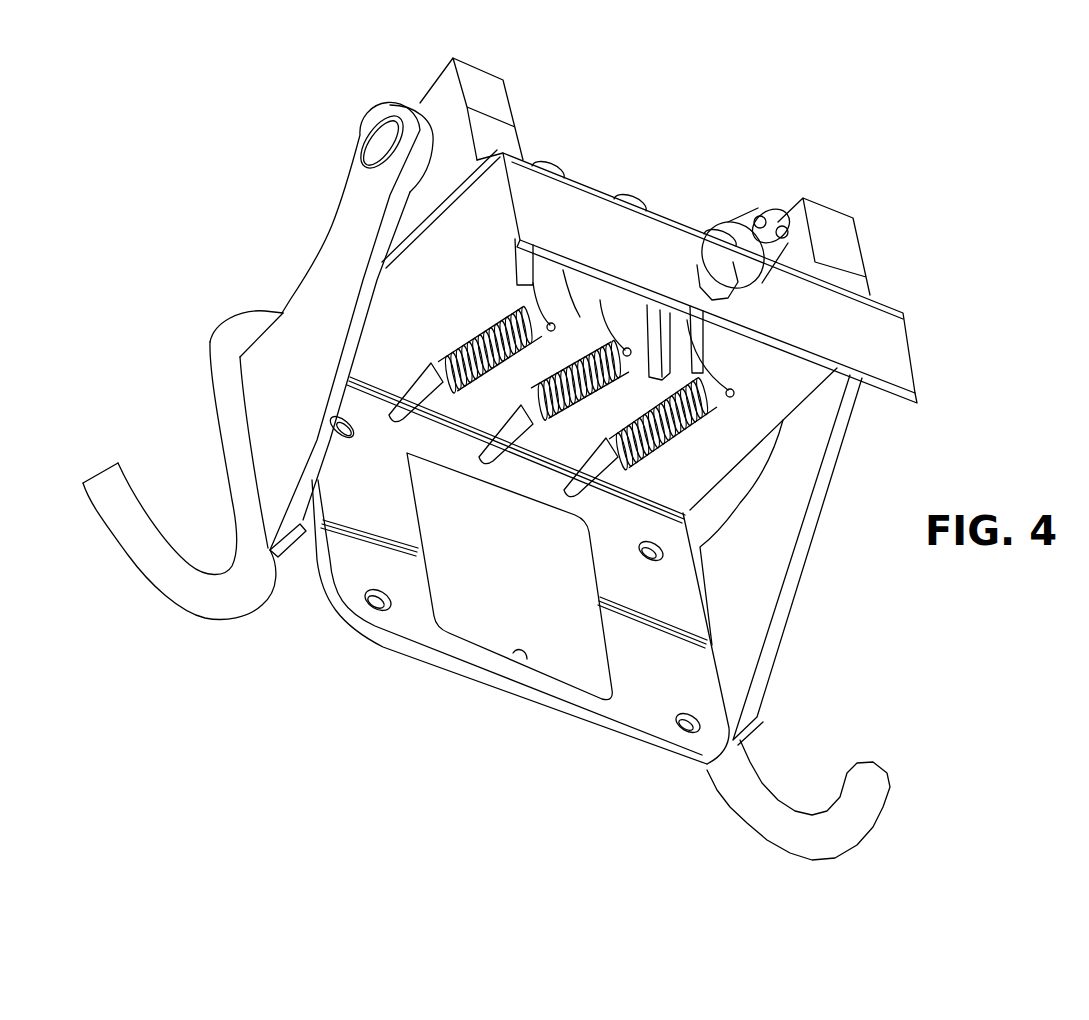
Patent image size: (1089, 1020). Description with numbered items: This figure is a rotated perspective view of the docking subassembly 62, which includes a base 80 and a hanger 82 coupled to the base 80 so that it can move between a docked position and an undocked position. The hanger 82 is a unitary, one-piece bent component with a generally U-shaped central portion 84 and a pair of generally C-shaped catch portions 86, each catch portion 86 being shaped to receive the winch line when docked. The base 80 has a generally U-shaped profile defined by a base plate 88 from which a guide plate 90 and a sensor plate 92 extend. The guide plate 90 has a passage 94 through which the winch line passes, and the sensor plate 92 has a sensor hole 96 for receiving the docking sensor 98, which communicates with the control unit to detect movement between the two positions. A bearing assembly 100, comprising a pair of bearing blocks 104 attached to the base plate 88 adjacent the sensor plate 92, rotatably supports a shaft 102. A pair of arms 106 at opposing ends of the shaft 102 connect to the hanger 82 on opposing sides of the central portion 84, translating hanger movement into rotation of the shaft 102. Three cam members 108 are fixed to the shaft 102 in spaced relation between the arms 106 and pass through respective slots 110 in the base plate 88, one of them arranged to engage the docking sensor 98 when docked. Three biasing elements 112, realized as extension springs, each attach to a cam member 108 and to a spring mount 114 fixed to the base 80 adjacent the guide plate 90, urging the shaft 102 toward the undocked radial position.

The docking subassembly 62 is at (736, 205).
The base 80 is at (735, 321).
The hanger 82 is at (193, 413).
The central portion 84 is at (246, 304).
The catch portions 86 is at (486, 694).
The base plate 88 is at (410, 301).
The guide plate 90 is at (348, 568).
The sensor plate 92 is at (822, 336).
The passage 94 is at (522, 662).
The sensor hole 96 is at (700, 258).
The docking sensor 98 is at (744, 211).
The bearing assembly 100 is at (650, 149).
The shaft 102 is at (394, 105).
The bearing blocks 104 is at (512, 140).
The arms 106 is at (284, 368).
The cam members 108 is at (626, 309).
The slots 110 is at (522, 290).
The biasing elements 112 is at (576, 399).
The spring mounts 114 is at (404, 420).